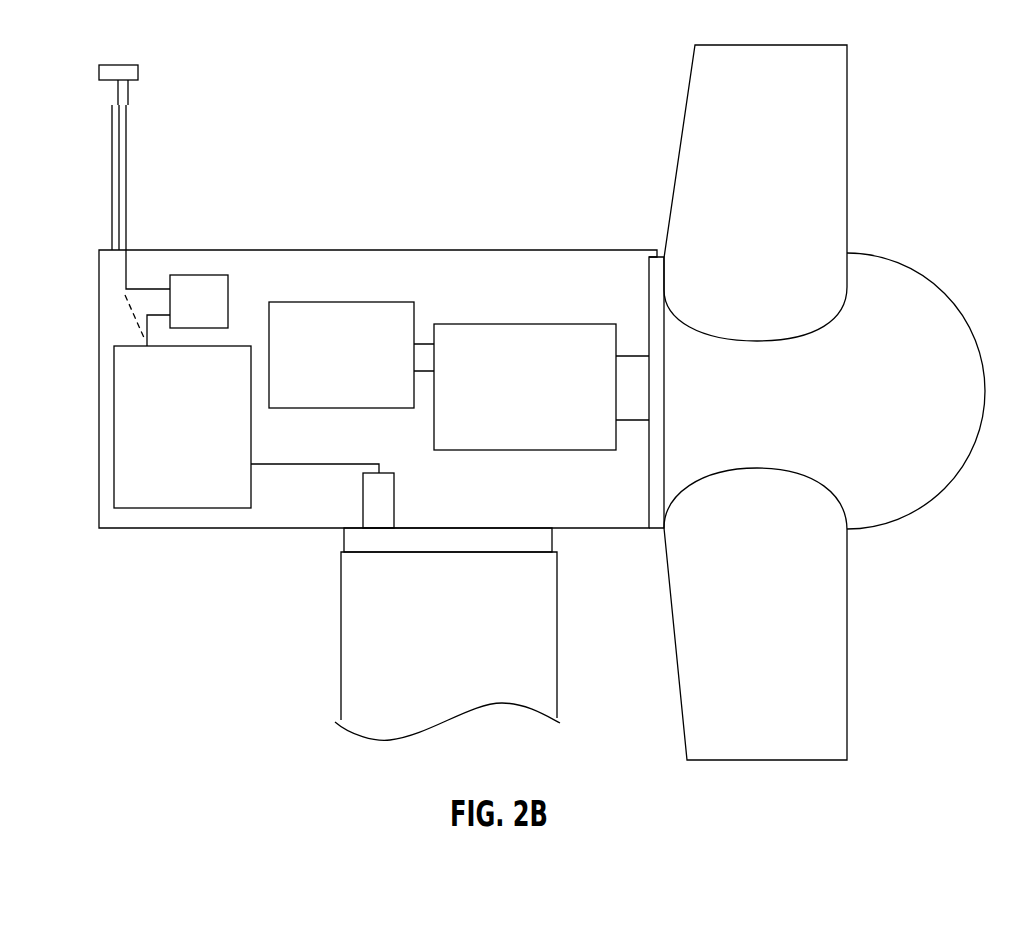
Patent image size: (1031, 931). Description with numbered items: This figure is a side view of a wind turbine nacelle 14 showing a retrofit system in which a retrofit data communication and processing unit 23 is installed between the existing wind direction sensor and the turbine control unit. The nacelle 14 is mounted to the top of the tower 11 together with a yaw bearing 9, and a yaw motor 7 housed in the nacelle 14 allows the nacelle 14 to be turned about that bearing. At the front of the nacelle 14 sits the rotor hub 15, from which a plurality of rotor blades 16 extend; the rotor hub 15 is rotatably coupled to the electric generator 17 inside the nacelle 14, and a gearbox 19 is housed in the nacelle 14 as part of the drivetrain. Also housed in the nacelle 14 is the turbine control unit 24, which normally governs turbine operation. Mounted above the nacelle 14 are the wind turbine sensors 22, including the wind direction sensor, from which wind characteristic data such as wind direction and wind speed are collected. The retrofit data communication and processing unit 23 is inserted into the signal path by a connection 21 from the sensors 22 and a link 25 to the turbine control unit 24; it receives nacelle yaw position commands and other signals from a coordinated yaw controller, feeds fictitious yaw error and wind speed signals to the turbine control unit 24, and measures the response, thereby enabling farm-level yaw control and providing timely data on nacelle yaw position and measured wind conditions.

The yaw motor 7 is at (395, 502).
The yaw bearing 9 is at (553, 537).
The tower 11 is at (557, 627).
The nacelle 14 is at (555, 248).
The rotor hub 15 is at (942, 307).
The rotor blades 16 is at (842, 128).
The electric generator 17 is at (368, 302).
The gearbox 19 is at (570, 324).
The cable 21 is at (128, 303).
The wind turbine sensors 22 is at (139, 73).
The retrofit data communication and processing unit 23 is at (202, 275).
The turbine control unit 24 is at (114, 433).
The communication link 25 is at (138, 322).